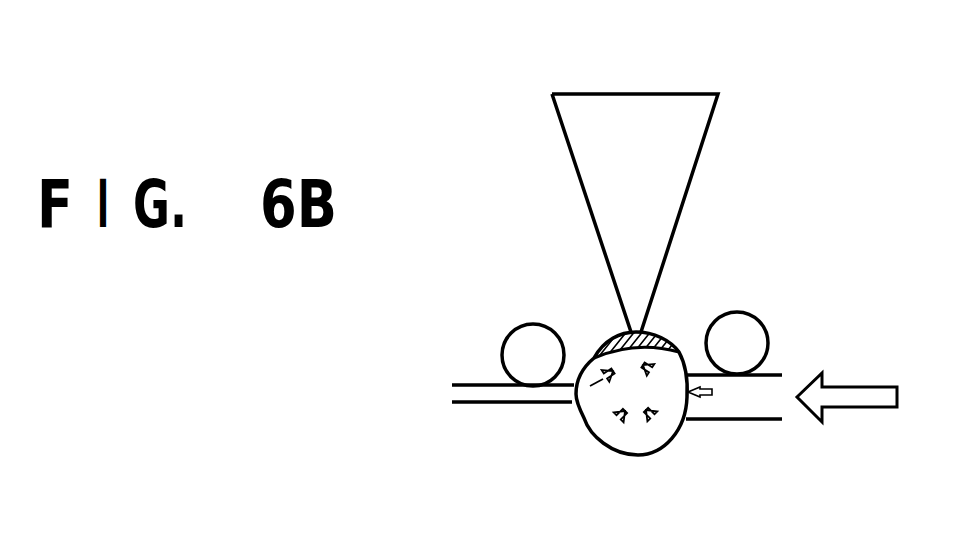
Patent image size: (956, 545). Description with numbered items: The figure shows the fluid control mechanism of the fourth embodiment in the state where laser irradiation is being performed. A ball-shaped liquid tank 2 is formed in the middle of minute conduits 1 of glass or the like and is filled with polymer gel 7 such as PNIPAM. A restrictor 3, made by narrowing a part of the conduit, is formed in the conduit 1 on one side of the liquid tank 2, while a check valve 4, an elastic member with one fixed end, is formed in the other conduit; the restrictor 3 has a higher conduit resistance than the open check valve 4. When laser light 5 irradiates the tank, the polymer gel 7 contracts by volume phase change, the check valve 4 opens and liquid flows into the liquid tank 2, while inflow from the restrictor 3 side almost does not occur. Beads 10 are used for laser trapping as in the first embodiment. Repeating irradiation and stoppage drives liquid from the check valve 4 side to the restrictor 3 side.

The minute conduit 1 is at (472, 404).
The liquid tank 2 is at (625, 443).
The restrictor 3 is at (573, 405).
The check valve 4 is at (688, 400).
The laser light 5 is at (633, 110).
The polymer gel 7 is at (607, 343).
The beads 10 is at (750, 328).